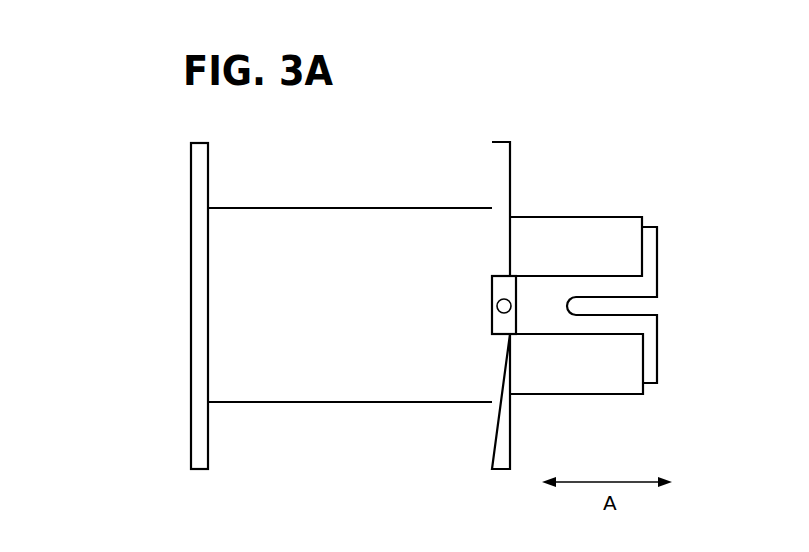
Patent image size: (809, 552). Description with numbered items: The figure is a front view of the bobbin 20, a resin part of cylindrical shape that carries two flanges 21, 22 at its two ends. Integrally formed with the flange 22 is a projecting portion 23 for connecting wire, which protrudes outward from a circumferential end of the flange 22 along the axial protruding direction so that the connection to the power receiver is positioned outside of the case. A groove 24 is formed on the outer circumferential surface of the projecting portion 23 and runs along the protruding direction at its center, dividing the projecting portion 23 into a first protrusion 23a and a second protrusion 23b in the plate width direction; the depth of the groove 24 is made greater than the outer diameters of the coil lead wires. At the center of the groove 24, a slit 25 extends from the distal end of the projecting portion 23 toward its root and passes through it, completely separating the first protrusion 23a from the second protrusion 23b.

The bobbin 20 is at (372, 160).
The flange 21 is at (202, 142).
The flange 22 is at (502, 142).
The projecting portion 23 is at (641, 305).
The first protrusion 23a is at (617, 252).
The second protrusion 23b is at (620, 354).
The groove 24 is at (538, 305).
The slit 25 is at (590, 307).